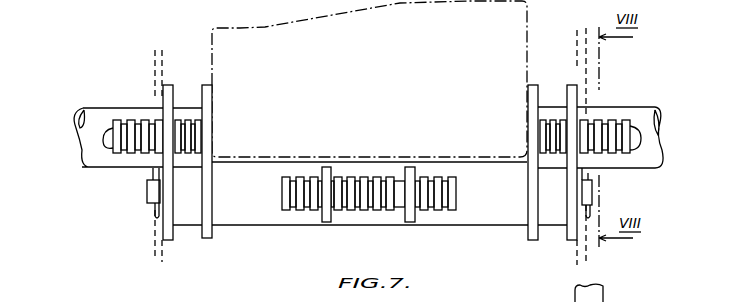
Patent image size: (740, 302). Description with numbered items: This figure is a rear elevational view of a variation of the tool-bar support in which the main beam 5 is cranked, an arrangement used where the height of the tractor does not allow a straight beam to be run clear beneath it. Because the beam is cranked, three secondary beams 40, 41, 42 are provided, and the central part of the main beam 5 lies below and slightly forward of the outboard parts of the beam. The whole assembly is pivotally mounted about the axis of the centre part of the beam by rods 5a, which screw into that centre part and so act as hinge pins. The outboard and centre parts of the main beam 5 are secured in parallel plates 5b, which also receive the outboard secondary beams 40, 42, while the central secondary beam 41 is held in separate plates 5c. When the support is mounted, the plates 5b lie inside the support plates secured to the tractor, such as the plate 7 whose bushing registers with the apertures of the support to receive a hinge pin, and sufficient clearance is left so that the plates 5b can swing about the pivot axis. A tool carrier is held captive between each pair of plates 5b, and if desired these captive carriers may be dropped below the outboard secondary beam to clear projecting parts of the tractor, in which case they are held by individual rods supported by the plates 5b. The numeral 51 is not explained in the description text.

The main beam 5 is at (100, 110).
The rods 5a is at (148, 207).
The parallel plates 5b is at (180, 247).
The plates 5c is at (328, 222).
The plate 7 is at (155, 72).
The secondary beam 40 is at (160, 117).
The secondary beam 41 is at (297, 215).
The secondary beam 42 is at (597, 120).
The rod 51 is at (365, 170).